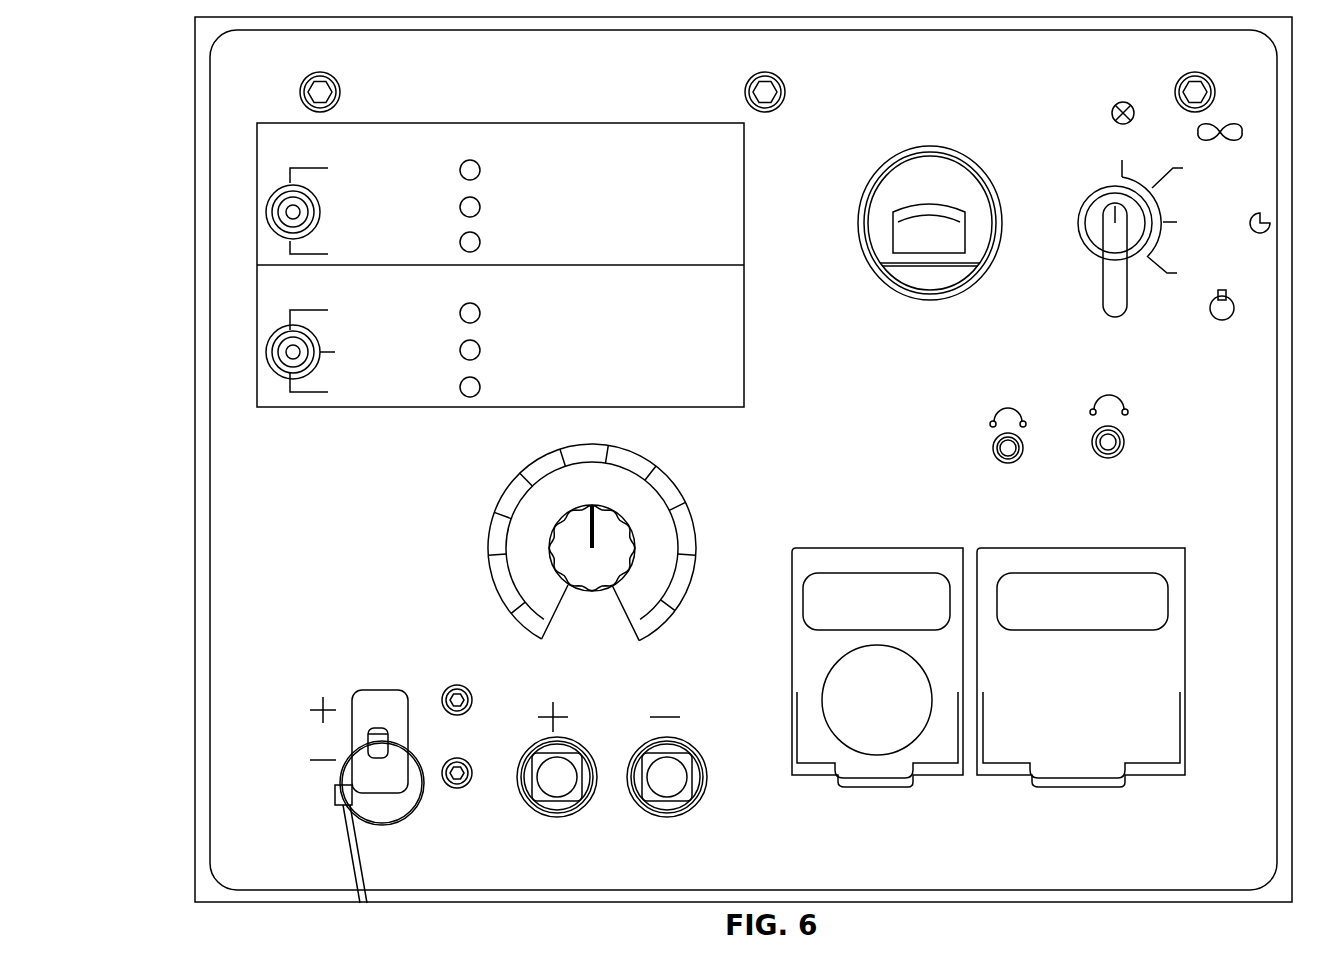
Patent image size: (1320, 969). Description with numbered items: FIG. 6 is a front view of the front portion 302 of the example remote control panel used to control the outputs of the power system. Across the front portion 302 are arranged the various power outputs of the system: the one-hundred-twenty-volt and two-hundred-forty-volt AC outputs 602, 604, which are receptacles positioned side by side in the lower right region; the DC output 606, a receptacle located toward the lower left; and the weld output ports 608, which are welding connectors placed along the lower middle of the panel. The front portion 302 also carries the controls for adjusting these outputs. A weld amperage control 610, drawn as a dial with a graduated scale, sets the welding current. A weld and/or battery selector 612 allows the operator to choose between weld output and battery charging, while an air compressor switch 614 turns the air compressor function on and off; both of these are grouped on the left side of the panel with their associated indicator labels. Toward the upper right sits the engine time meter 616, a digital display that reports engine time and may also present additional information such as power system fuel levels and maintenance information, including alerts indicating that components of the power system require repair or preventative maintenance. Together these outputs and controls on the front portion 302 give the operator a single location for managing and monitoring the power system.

The front portion 302 is at (193, 88).
The 120V AC output 602 is at (932, 548).
The 240V AC output 604 is at (1077, 548).
The DC output 606 is at (353, 717).
The weld output ports 608 is at (542, 817).
The weld amperage control 610 is at (550, 458).
The weld and/or battery selector 612 is at (283, 378).
The air compressor switch 614 is at (280, 190).
The engine time meter 616 is at (889, 285).